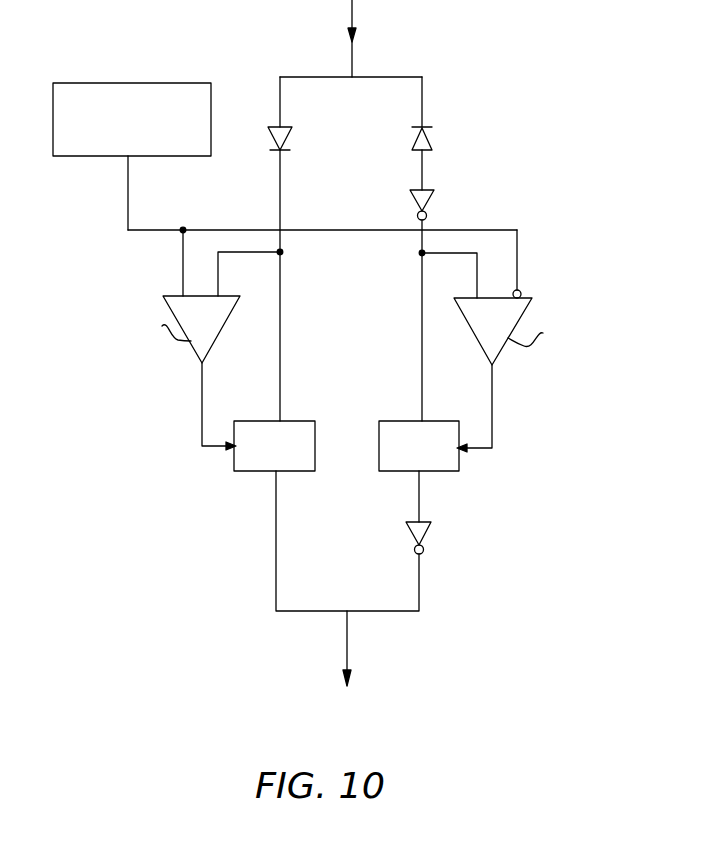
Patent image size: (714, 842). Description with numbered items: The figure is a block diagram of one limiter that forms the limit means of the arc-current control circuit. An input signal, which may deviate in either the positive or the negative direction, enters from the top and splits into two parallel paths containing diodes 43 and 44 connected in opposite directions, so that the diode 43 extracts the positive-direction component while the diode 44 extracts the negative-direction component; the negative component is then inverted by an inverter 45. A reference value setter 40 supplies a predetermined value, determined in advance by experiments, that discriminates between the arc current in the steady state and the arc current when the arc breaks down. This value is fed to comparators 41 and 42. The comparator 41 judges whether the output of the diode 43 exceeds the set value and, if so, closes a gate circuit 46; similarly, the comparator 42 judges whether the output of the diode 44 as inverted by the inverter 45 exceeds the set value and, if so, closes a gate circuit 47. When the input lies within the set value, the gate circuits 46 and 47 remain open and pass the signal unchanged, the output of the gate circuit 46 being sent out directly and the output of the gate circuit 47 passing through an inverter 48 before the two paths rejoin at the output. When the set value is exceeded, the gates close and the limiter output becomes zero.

The reference value setter 40 is at (240, 137).
The comparator 41 is at (213, 333).
The comparator 42 is at (504, 334).
The diode 43 is at (286, 142).
The diode 44 is at (428, 140).
The inverter 45 is at (428, 200).
The gate circuit 46 is at (290, 421).
The gate circuit 47 is at (432, 421).
The inverter 48 is at (425, 534).